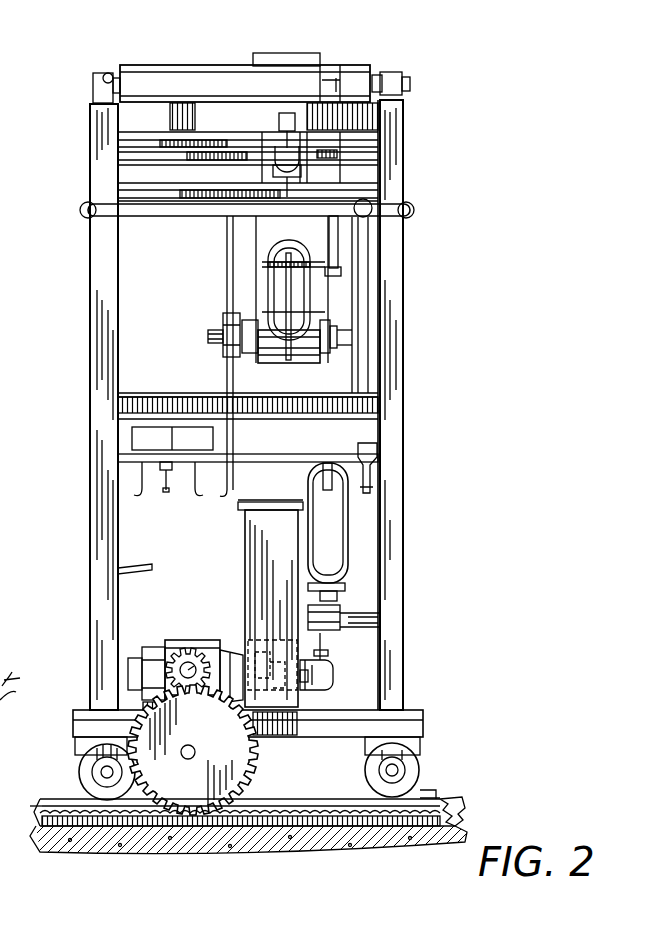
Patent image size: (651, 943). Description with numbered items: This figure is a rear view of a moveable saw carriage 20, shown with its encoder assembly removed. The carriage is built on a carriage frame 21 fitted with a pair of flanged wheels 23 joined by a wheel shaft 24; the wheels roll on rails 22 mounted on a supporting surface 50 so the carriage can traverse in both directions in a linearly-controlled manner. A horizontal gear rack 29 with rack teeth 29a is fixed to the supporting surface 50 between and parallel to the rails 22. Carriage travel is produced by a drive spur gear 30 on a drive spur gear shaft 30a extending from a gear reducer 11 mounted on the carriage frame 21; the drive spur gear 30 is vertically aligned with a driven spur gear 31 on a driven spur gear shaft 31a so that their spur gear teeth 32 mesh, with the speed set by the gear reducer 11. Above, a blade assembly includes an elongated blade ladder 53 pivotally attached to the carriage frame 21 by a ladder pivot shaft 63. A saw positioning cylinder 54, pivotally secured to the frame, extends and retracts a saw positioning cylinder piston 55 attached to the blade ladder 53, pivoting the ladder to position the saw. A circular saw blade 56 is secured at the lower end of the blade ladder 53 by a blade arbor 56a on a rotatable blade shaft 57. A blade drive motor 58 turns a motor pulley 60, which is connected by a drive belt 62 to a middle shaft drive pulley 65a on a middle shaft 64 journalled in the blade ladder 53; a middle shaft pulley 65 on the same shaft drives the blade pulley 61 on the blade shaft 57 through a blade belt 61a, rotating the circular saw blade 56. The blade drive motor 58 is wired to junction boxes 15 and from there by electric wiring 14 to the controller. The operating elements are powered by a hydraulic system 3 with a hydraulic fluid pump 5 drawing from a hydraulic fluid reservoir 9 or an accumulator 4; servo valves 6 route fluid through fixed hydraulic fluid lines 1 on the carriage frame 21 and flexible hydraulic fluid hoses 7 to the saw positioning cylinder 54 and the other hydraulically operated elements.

The fixed hydraulic fluid lines 1 is at (130, 217).
The hydraulic system 3 is at (250, 495).
The accumulator 4 is at (350, 545).
The hydraulic fluid pump 5 is at (314, 688).
The servo valves 6 is at (30, 806).
The flexible hydraulic fluid hoses 7 is at (140, 565).
The hydraulic fluid reservoir 9 is at (288, 502).
The gear reducer 11 is at (186, 645).
The electric wiring 14 is at (145, 490).
The junction boxes 15 is at (190, 430).
The moveable saw carriage 20 is at (430, 85).
The carriage frame 21 is at (90, 170).
The rails 22 is at (432, 805).
The flanged wheels 23 is at (80, 756).
The wheel shaft 24 is at (104, 772).
The horizontal gear rack 29 is at (314, 808).
The rack teeth 29a is at (256, 826).
The drive spur gear 30 is at (190, 646).
The drive spur gear shaft 30a is at (180, 650).
The driven spur gear 31 is at (135, 722).
The driven spur gear shaft 31a is at (188, 760).
The spur gear teeth 32 is at (236, 648).
The supporting surface 50 is at (105, 835).
The blade ladder 53 is at (262, 250).
The saw positioning cylinder 54 is at (270, 182).
The saw positioning cylinder piston 55 is at (280, 140).
The circular saw blade 56 is at (230, 298).
The blade arbor 56a is at (226, 356).
The blade shaft 57 is at (210, 337).
The blade drive motor 58 is at (283, 54).
The motor pulley 60 is at (340, 66).
The blade pulley 61 is at (287, 362).
The blade belt 61a is at (332, 335).
The drive belt 62 is at (340, 237).
The ladder pivot shaft 63 is at (110, 76).
The middle shaft 64 is at (292, 280).
The middle shaft pulley 65 is at (300, 310).
The middle shaft drive pulley 65a is at (318, 278).